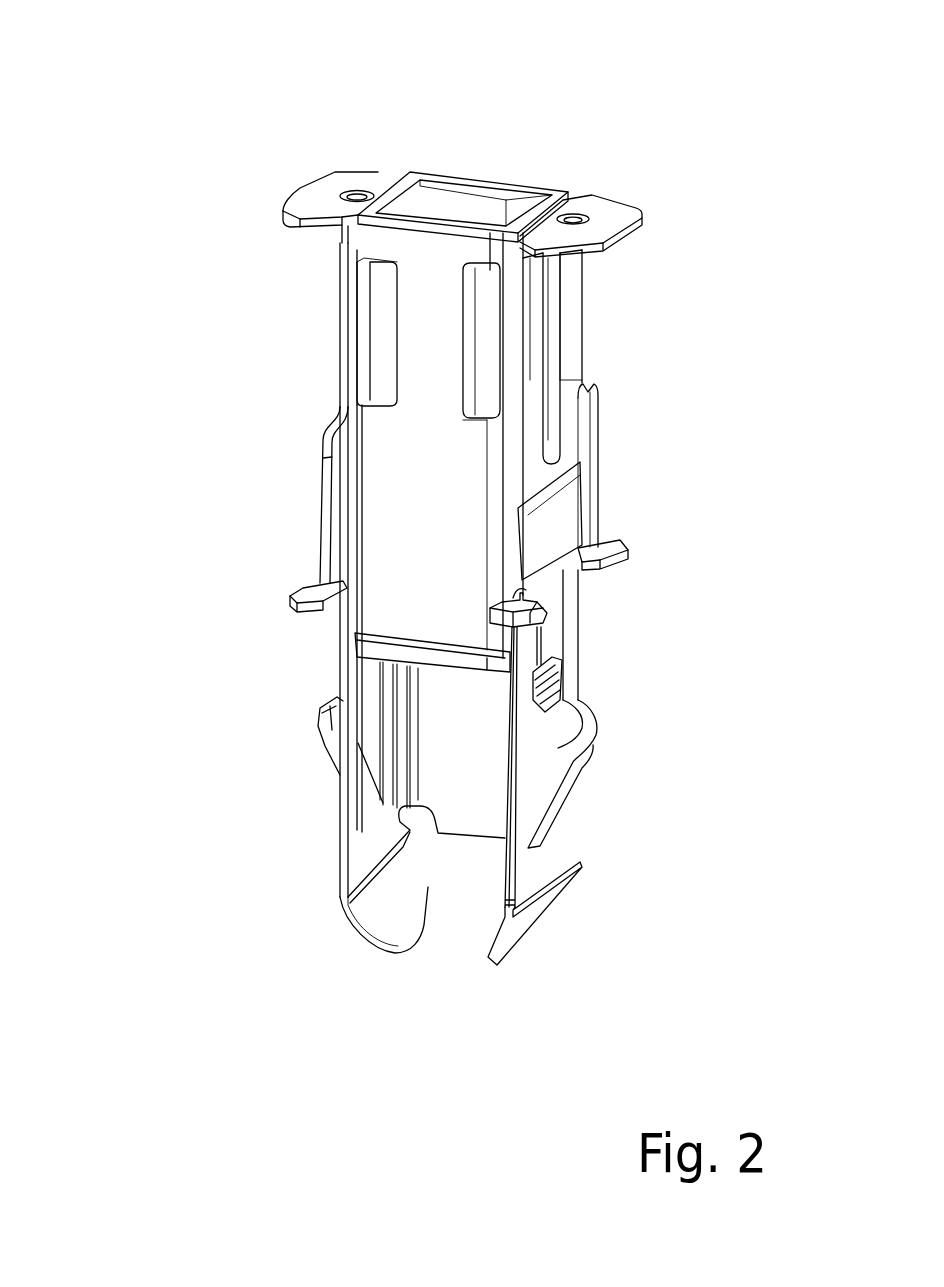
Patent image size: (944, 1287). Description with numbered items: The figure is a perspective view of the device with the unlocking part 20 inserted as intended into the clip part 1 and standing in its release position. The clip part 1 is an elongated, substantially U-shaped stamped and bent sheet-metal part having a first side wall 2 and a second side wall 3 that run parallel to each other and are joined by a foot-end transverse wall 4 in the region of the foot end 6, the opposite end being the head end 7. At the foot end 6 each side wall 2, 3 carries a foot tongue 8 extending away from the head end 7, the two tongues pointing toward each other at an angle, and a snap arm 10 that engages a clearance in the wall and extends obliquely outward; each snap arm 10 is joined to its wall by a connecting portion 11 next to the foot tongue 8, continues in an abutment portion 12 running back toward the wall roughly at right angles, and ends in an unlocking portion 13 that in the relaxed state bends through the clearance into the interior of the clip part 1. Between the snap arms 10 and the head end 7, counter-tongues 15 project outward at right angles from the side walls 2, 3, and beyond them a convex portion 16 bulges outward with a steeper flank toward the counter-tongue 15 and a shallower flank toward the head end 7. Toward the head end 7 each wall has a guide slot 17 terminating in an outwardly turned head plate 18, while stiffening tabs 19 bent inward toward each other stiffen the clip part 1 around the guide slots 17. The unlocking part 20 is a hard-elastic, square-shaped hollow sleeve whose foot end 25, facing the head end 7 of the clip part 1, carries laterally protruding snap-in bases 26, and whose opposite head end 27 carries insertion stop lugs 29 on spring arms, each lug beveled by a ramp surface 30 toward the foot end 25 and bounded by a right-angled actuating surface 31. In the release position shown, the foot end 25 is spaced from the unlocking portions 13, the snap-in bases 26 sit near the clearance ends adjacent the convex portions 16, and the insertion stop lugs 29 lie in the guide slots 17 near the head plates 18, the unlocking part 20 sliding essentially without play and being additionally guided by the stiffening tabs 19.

The clip part 1 is at (200, 773).
The first side wall 2 is at (347, 443).
The second side wall 3 is at (582, 418).
The foot-end transverse wall 4 is at (465, 808).
The foot end 6 is at (284, 965).
The head end 7 is at (156, 192).
The foot tongue 8 is at (396, 913).
The snap arm 10 is at (305, 713).
The connecting portion 11 is at (365, 797).
The abutment portion 12 is at (338, 697).
The unlocking portion 13 is at (548, 672).
The counter-tongue 15 is at (305, 590).
The convex portion 16 is at (572, 512).
The guide slot 17 is at (361, 195).
The head plate 18 is at (317, 202).
The stiffening tab 19 is at (370, 330).
The unlocking part 20 is at (470, 118).
The foot end of the unlocking part 25 is at (455, 684).
The snap-in base 26 is at (552, 612).
The head end of the unlocking part 27 is at (503, 203).
The insertion stop lug 29 is at (580, 298).
The ramp surface 30 is at (583, 372).
The actuating surface 31 is at (585, 265).